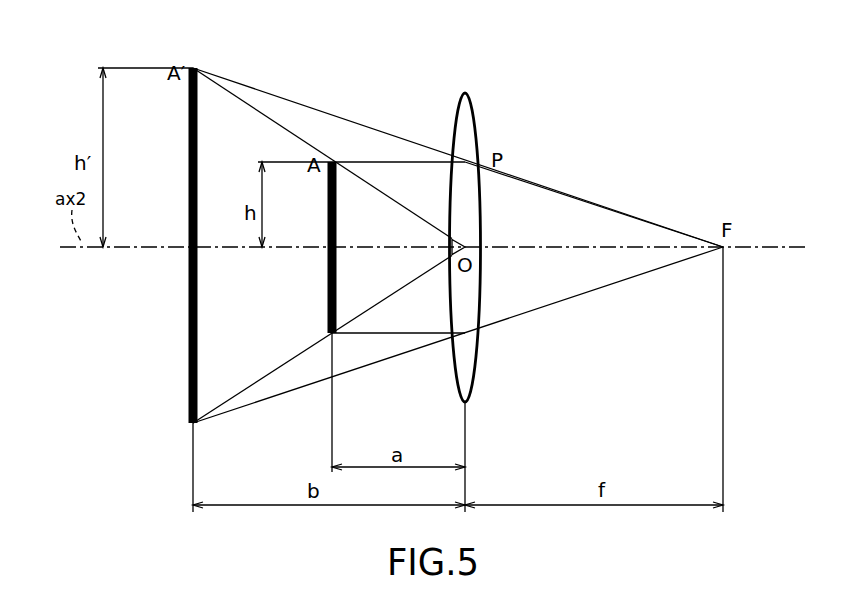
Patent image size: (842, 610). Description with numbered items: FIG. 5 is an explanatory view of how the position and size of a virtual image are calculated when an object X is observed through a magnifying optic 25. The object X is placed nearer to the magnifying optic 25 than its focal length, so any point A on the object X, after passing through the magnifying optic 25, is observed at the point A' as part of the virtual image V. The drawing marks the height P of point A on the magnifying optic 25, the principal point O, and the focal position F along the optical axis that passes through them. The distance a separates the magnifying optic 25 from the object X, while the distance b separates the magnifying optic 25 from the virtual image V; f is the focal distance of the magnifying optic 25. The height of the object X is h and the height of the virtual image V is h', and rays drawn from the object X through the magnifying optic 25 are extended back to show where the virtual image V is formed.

The magnifying optic 25 is at (475, 117).
The virtual image V is at (188, 338).
The object X is at (327, 281).